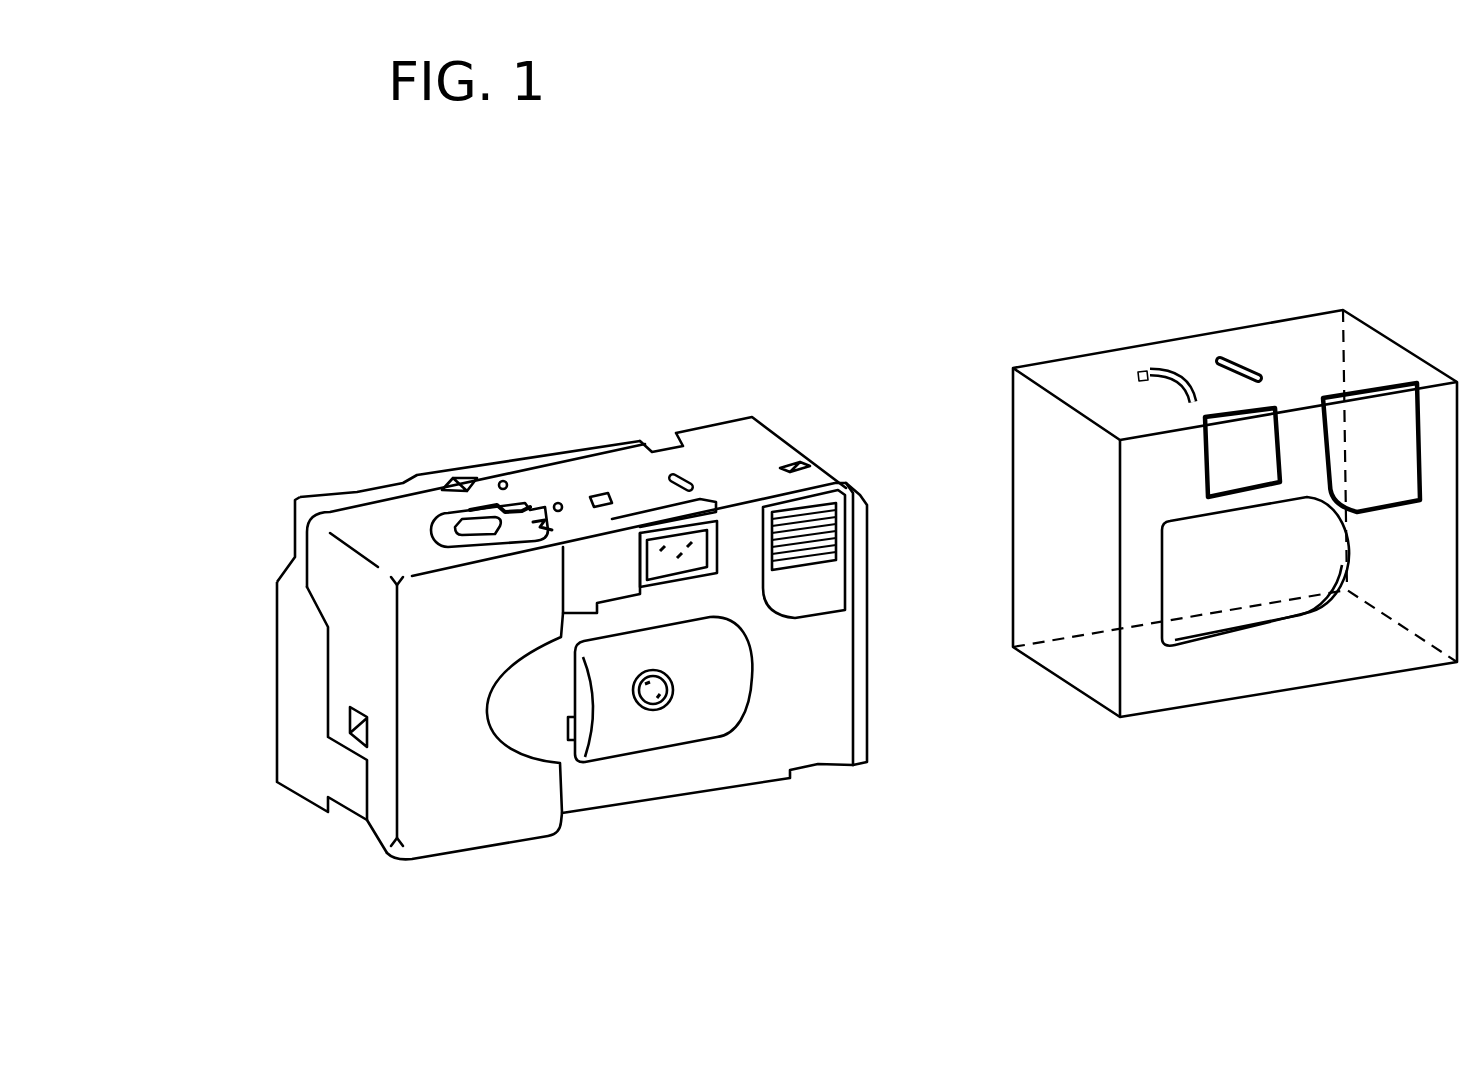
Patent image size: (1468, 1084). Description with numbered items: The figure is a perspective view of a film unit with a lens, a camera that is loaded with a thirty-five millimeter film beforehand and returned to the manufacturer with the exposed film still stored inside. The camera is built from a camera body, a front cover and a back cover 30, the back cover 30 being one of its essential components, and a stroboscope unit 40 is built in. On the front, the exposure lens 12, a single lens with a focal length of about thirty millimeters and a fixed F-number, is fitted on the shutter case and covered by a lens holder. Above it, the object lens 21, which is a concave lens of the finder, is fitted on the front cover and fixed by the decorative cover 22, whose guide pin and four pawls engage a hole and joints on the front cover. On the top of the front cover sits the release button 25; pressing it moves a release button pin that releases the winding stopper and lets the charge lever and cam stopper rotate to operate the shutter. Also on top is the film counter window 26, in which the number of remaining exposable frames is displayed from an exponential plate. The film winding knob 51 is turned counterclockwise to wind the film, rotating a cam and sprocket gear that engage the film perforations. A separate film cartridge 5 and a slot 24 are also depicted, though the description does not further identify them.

The film cartridge 5 is at (1187, 333).
The exposure lens 12 is at (644, 709).
The object lens 21 is at (678, 545).
The decorative cover 22 is at (723, 737).
The film advance indicator slot 24 is at (668, 482).
The release button 25 is at (440, 532).
The film counter window 26 is at (593, 497).
The back cover 30 is at (277, 700).
The stroboscope unit 40 is at (822, 510).
The film winding knob 51 is at (300, 497).